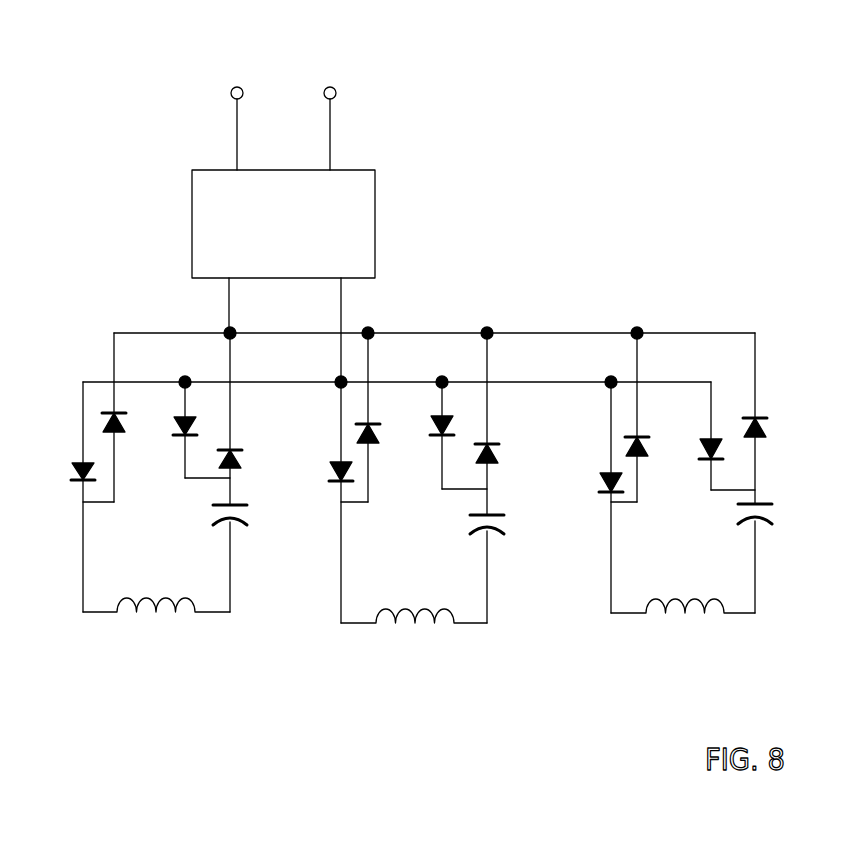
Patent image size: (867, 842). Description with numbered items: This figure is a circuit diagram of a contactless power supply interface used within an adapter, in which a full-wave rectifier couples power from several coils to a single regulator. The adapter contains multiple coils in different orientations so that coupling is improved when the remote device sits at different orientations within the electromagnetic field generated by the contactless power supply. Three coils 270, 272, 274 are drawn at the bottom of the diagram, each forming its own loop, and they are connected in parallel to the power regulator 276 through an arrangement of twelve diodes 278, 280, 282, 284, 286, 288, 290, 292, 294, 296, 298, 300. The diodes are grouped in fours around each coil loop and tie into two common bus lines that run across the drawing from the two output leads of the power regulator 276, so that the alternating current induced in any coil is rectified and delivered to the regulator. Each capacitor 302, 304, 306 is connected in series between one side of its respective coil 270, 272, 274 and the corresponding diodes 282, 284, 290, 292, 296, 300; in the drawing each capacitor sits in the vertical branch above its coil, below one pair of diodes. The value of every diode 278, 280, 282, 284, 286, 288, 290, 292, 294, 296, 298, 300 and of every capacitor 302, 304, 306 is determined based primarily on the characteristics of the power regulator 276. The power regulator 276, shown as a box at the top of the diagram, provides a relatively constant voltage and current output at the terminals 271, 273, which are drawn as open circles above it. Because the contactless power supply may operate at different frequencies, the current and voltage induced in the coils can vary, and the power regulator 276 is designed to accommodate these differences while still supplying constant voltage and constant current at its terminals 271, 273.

The coil 270 is at (119, 629).
The terminal 271 is at (237, 87).
The coil 272 is at (378, 638).
The terminal 273 is at (330, 87).
The coil 274 is at (647, 628).
The power regulator 276 is at (376, 198).
The diode 278 is at (72, 464).
The diode 280 is at (115, 410).
The diode 282 is at (178, 417).
The diode 284 is at (247, 444).
The diode 286 is at (330, 487).
The diode 288 is at (387, 435).
The diode 290 is at (432, 412).
The diode 292 is at (508, 424).
The diode 294 is at (592, 493).
The diode 296 is at (703, 447).
The diode 298 is at (657, 453).
The diode 300 is at (775, 421).
The capacitor 302 is at (195, 515).
The capacitor 304 is at (471, 540).
The capacitor 306 is at (788, 522).